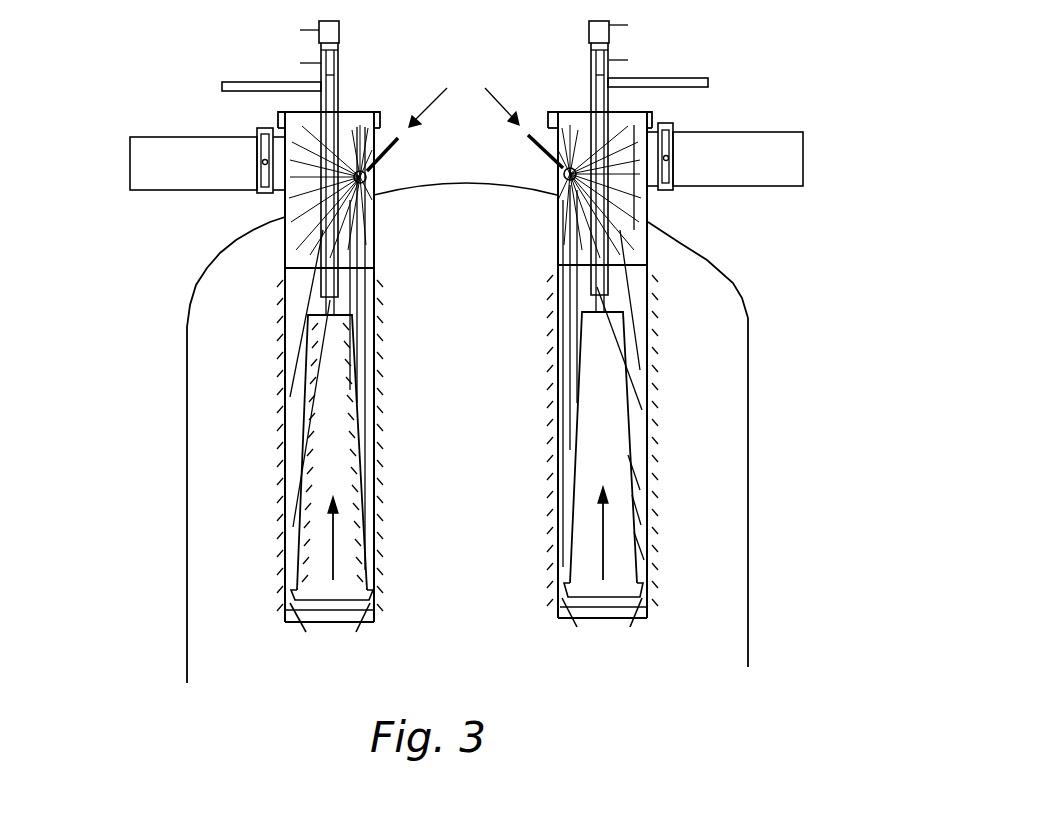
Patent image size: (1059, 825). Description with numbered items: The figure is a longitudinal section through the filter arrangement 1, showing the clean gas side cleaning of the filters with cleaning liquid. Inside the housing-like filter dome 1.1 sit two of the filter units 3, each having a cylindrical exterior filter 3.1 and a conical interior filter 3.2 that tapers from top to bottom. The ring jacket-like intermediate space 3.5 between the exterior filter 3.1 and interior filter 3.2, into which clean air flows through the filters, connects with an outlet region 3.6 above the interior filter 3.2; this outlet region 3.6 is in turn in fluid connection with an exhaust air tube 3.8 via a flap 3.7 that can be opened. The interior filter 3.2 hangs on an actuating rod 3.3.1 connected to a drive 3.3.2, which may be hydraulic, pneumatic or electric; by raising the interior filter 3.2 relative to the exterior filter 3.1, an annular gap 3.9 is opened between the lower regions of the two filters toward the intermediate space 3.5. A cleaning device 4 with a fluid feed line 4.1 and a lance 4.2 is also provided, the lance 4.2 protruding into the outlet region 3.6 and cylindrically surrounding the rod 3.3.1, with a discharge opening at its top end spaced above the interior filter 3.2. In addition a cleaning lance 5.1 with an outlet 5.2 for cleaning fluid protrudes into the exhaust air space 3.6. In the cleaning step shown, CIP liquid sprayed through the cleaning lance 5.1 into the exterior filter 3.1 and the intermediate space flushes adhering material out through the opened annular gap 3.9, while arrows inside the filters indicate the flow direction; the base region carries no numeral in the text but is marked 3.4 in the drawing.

The filter arrangement 1 is at (160, 409).
The filter dome 1.1 is at (748, 415).
The filter unit 3 is at (704, 262).
The exterior filter 3.1 is at (649, 315).
The interior filter 3.2 is at (624, 353).
The actuating rod 3.3.1 is at (339, 100).
The drive 3.3.2 is at (339, 31).
The base plate 3.4 is at (649, 613).
The intermediate space 3.5 is at (638, 377).
The outlet region 3.6 is at (634, 213).
The flap 3.7 is at (675, 138).
The exhaust air tube 3.8 is at (803, 165).
The annular gap 3.9 is at (288, 613).
The cleaning device 4 is at (264, 55).
The fluid feed line 4.1 is at (242, 92).
The lance 4.2 is at (289, 196).
The cleaning lance 5.1 is at (399, 140).
The outlet 5.2 is at (367, 177).